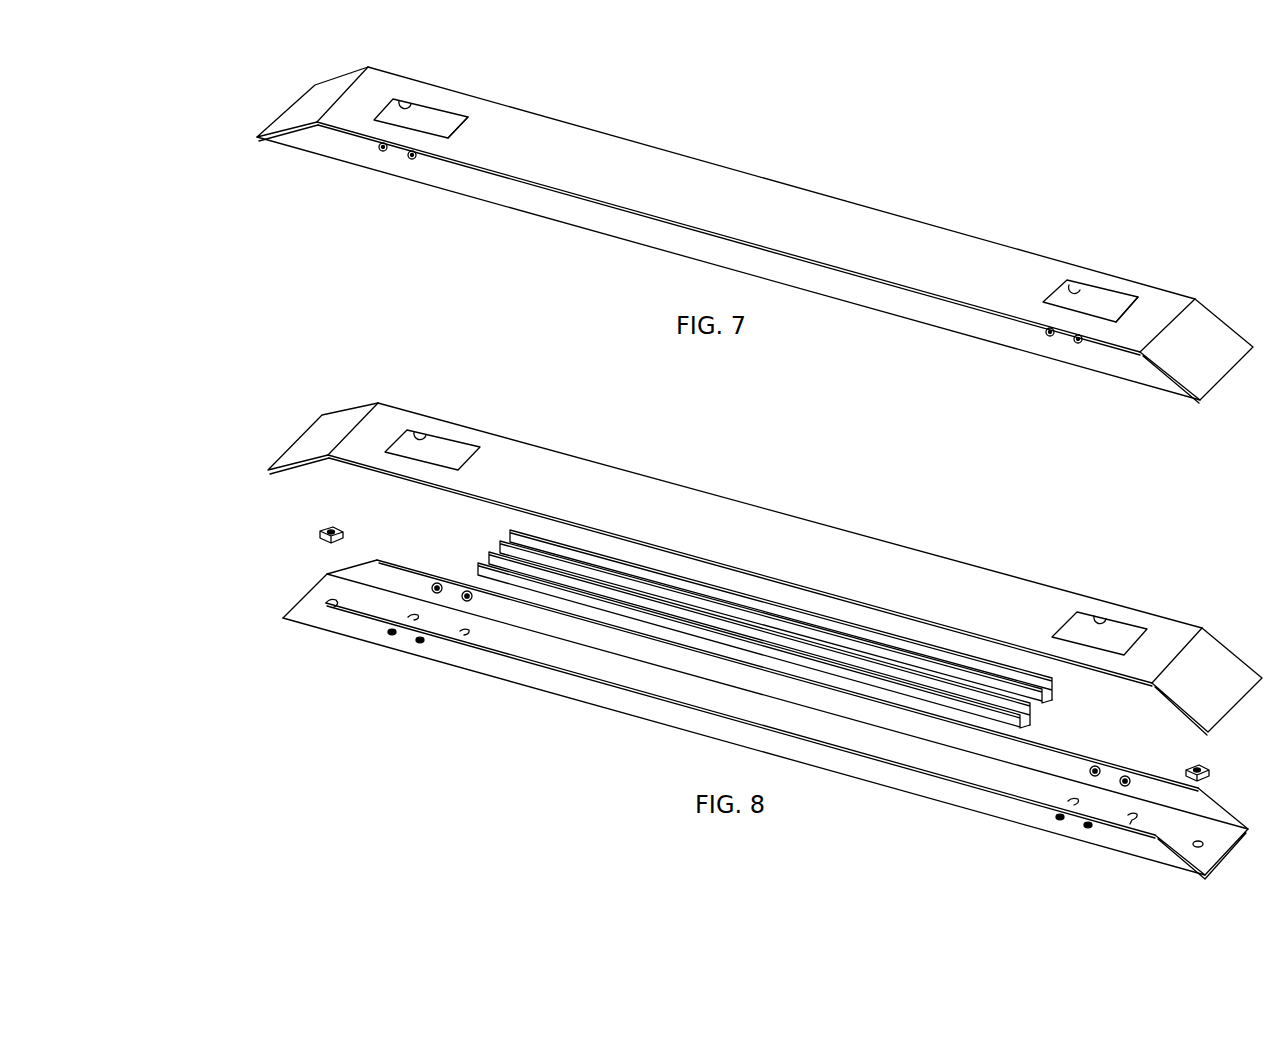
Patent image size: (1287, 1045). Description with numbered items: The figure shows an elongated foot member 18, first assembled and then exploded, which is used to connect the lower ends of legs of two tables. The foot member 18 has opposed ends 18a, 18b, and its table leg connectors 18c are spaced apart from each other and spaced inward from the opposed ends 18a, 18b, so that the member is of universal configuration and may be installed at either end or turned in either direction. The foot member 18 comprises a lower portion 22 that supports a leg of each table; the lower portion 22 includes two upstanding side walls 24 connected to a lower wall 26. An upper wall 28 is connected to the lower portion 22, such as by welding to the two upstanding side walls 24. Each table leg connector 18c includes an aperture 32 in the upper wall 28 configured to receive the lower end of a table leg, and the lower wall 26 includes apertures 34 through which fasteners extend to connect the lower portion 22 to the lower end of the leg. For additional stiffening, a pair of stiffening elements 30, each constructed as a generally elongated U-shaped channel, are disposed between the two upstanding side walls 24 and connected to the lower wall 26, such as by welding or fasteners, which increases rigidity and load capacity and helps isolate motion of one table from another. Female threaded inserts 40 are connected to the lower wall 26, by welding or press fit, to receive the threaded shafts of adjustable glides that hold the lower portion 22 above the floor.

In FIG. 7, the elongated foot member 18 is at (910, 194).
In FIG. 8, the elongated foot member 18 is at (565, 745).
In FIG. 7, the opposed end 18a is at (296, 76).
In FIG. 7, the opposed end 18b is at (1238, 306).
In FIG. 7, the table leg connector 18c is at (466, 116).
In FIG. 7, the lower portion 22 is at (917, 327).
In FIG. 8, the lower portion 22 is at (911, 806).
In FIG. 8, the upstanding side wall 24 is at (1205, 807).
In FIG. 8, the lower wall 26 is at (1225, 837).
In FIG. 7, the upper wall 28 is at (592, 136).
In FIG. 8, the upper wall 28 is at (980, 579).
In FIG. 8, the stiffening element 30 is at (1050, 688).
In FIG. 7, the aperture 32 is at (406, 104).
In FIG. 8, the aperture 32 is at (421, 440).
In FIG. 8, the aperture 34 is at (351, 648).
In FIG. 8, the female threaded insert 40 is at (318, 531).